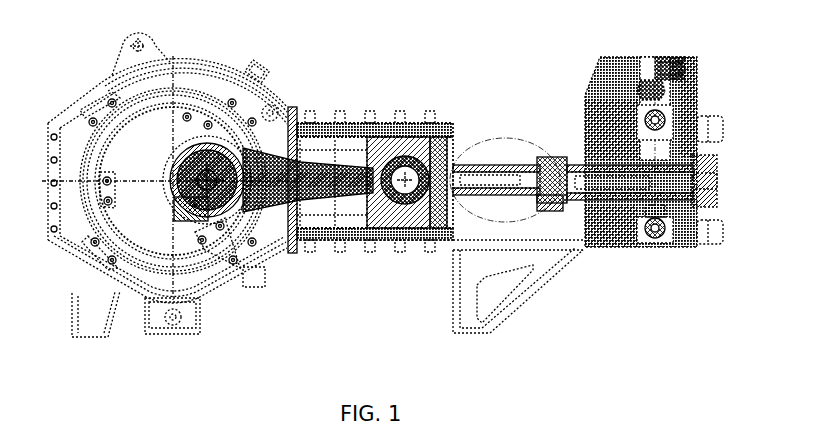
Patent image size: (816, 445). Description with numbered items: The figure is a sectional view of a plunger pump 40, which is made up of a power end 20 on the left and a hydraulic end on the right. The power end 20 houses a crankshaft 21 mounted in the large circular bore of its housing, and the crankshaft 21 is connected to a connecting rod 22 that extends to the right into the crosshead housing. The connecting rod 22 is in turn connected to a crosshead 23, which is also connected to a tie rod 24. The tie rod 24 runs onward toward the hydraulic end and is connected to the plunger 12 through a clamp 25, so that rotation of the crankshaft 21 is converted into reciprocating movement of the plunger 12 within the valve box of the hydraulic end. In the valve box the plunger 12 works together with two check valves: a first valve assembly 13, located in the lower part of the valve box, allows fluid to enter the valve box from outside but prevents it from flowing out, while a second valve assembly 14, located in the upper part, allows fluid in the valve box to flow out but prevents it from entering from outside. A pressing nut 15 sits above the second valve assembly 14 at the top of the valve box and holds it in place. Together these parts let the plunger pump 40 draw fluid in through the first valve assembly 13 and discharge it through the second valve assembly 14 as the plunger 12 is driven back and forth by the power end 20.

The plunger 12 is at (562, 170).
The first valve assembly 13 is at (657, 225).
The second valve assembly 14 is at (648, 87).
The pressing nut 15 is at (670, 70).
The power end 20 is at (228, 87).
The crankshaft 21 is at (150, 125).
The connecting rod 22 is at (302, 170).
The crosshead 23 is at (407, 143).
The tie rod 24 is at (457, 170).
The clamp 25 is at (546, 198).
The plunger pump 40 is at (399, 374).